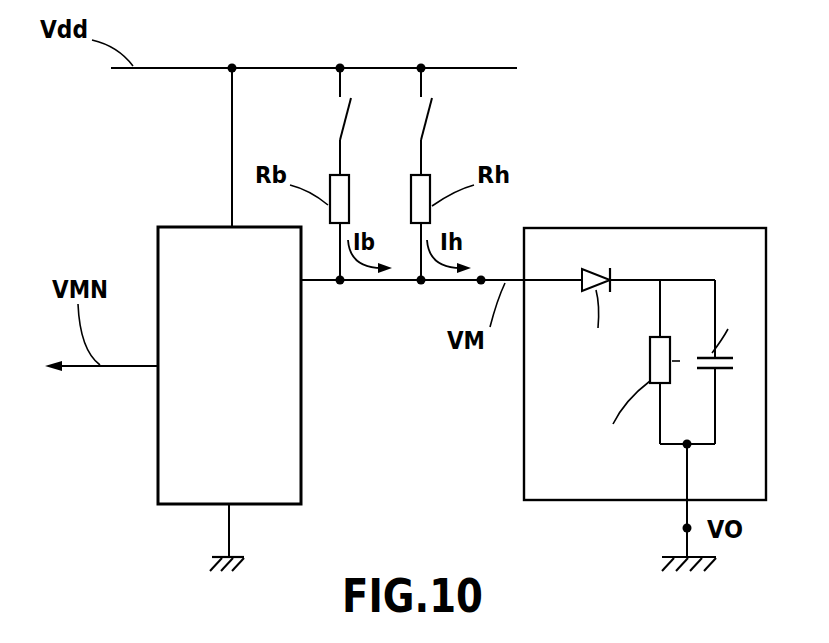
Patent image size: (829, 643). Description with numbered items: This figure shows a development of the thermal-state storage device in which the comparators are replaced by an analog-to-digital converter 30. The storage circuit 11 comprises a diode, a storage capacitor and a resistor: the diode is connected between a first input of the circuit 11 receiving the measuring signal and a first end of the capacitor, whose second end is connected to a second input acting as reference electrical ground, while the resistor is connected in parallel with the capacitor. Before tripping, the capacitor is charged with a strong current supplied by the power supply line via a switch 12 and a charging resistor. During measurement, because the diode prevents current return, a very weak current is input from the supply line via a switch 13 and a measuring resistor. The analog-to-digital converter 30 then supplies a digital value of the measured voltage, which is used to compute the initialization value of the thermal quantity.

The storage circuit 11 is at (702, 227).
The switch 12 is at (426, 120).
The switch 13 is at (343, 118).
The analog-to-digital converter 30 is at (301, 403).